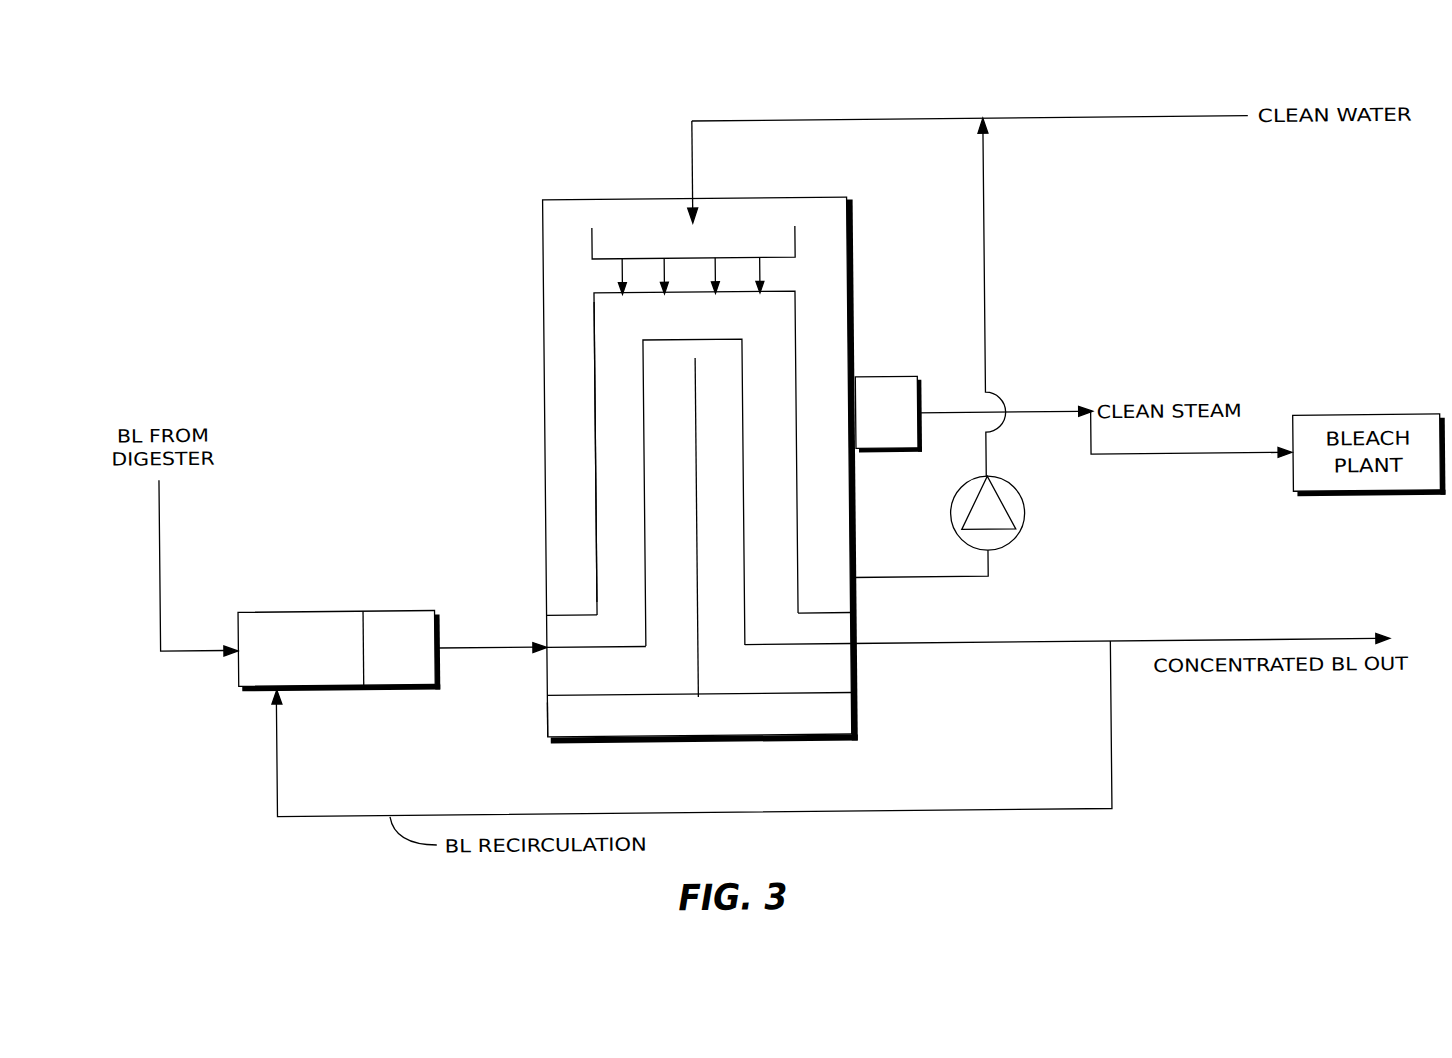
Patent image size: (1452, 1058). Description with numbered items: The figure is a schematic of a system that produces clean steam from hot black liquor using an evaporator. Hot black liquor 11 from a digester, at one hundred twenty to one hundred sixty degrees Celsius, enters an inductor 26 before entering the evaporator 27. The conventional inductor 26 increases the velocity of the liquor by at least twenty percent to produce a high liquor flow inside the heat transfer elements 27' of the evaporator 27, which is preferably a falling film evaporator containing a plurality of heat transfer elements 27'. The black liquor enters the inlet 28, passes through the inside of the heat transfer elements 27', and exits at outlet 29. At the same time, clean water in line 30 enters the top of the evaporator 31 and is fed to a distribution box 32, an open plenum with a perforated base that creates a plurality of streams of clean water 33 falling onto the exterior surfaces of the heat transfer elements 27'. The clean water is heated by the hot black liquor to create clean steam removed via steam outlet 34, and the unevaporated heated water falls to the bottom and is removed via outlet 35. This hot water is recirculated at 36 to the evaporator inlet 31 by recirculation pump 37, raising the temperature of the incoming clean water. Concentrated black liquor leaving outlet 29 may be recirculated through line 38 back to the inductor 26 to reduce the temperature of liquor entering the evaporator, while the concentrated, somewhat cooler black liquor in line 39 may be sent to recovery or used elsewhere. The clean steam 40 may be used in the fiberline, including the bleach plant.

The hot black liquor 11 is at (160, 506).
The inductor 26 is at (284, 606).
The evaporator 27 is at (672, 458).
The heat transfer elements 27' is at (570, 452).
The inlet 28 is at (544, 720).
The outlet 29 is at (855, 698).
The clean water line 30 is at (1096, 121).
The evaporator inlet 31 is at (720, 197).
The distribution box 32 is at (594, 245).
The streams of clean water 33 is at (620, 265).
The steam outlet 34 is at (858, 374).
The outlet 35 is at (857, 577).
The recirculated hot water 36 is at (987, 468).
The recirculation pump 37 is at (1017, 529).
The recirculation line 38 is at (1108, 733).
The concentrated black liquor line 39 is at (1030, 640).
The clean steam 40 is at (1030, 412).